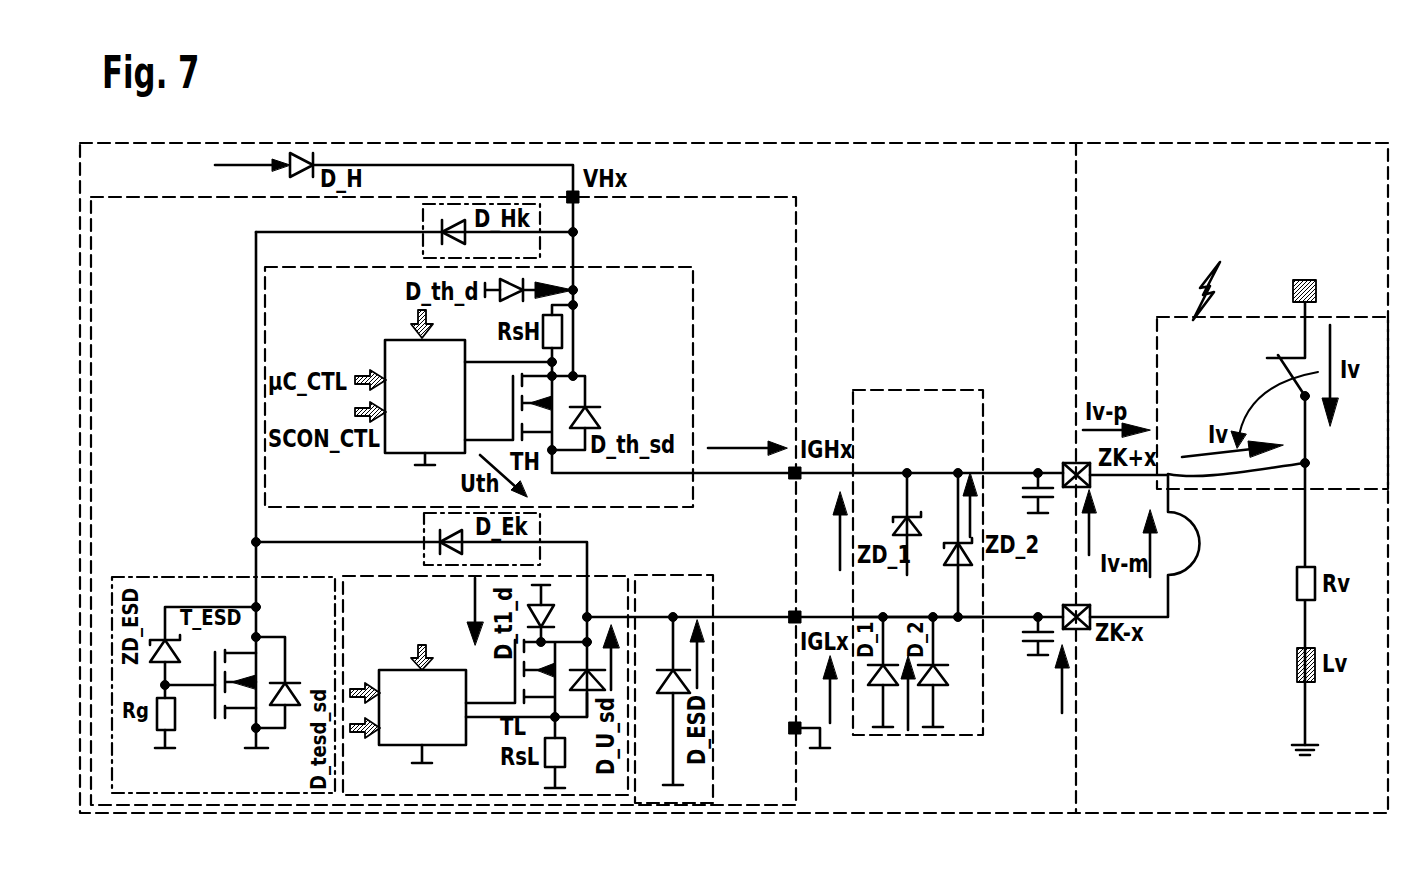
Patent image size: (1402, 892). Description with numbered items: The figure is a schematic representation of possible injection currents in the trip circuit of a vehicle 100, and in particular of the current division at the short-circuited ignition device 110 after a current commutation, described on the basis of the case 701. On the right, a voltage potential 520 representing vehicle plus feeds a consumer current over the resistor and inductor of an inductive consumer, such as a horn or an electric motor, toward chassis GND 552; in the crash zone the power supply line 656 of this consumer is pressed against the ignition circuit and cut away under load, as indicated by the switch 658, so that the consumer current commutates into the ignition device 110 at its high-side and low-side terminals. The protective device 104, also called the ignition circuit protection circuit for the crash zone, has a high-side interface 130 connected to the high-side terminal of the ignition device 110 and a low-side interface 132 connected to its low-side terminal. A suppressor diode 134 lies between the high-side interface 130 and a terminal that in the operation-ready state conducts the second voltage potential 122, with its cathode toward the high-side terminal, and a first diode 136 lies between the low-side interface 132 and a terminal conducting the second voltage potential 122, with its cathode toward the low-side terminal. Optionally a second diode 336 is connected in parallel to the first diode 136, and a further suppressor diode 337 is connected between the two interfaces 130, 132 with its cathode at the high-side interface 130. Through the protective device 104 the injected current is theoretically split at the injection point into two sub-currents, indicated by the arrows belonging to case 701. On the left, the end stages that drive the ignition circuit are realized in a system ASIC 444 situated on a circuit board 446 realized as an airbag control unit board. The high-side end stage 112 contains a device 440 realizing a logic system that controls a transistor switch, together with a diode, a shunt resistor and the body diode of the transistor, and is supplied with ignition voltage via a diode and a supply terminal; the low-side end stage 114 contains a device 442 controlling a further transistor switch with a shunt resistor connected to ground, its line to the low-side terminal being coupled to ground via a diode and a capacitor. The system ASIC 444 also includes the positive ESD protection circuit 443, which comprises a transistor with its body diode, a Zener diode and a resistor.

The vehicle 100 is at (1388, 170).
The protective device 104 is at (965, 388).
The ignition device 110 is at (1189, 570).
The high-side end stage 112 is at (629, 265).
The low-side end stage 114 is at (608, 576).
The second voltage potential 122 is at (907, 575).
The high-side interface 130 is at (958, 470).
The low-side interface 132 is at (883, 612).
The suppressor diode 134 is at (897, 530).
The first diode 136 is at (875, 688).
The second diode 336 is at (950, 680).
The further suppressor diode 337 is at (947, 540).
The device 440 is at (385, 350).
The device 442 is at (392, 670).
The positive IGH/IGL_ESD-P circuit 443 is at (168, 576).
The system ASIC 444 is at (796, 243).
The circuit board 446 is at (1080, 178).
The voltage potential 520 is at (1303, 278).
The chassis GND 552 is at (1305, 757).
The power supply line 656 is at (1305, 527).
The switch 658 is at (1279, 369).
The case 701 is at (1207, 268).